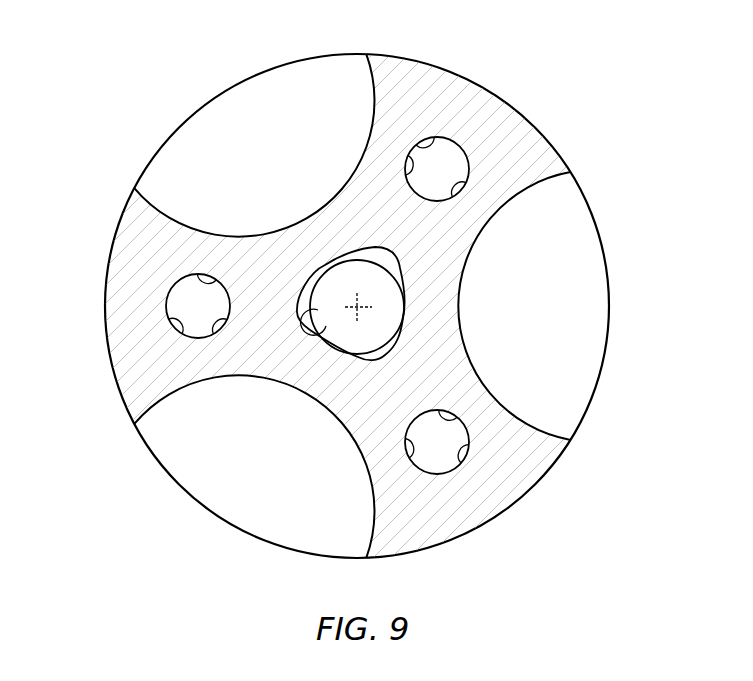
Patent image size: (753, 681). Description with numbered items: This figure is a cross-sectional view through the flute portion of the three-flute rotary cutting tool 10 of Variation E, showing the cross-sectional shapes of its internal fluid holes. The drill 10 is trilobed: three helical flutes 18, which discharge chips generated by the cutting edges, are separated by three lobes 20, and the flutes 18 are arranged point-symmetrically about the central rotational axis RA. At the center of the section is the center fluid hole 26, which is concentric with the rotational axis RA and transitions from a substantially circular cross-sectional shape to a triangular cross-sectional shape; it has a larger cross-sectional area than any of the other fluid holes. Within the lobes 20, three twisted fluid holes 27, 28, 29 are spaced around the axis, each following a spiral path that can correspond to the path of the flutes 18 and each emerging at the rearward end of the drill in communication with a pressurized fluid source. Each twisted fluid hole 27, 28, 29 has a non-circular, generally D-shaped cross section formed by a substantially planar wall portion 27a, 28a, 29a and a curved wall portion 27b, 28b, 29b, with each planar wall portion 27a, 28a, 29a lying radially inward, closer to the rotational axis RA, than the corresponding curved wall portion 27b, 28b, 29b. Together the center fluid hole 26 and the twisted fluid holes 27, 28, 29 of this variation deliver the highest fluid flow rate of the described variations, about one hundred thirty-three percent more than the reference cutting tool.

The rotary cutting tool 10 is at (667, 117).
The flutes 18 is at (245, 126).
The lobes 20 is at (500, 96).
The center fluid hole 26 is at (302, 318).
The twisted fluid hole 27 is at (211, 278).
The planar wall portion 27a is at (208, 322).
The curved wall portion 27b is at (183, 329).
The twisted fluid hole 28 is at (417, 447).
The planar wall portion 28a is at (465, 424).
The curved wall portion 28b is at (470, 447).
The twisted fluid hole 29 is at (458, 188).
The planar wall portion 29a is at (406, 158).
The curved wall portion 29b is at (423, 146).
The rotational axis RA is at (357, 297).